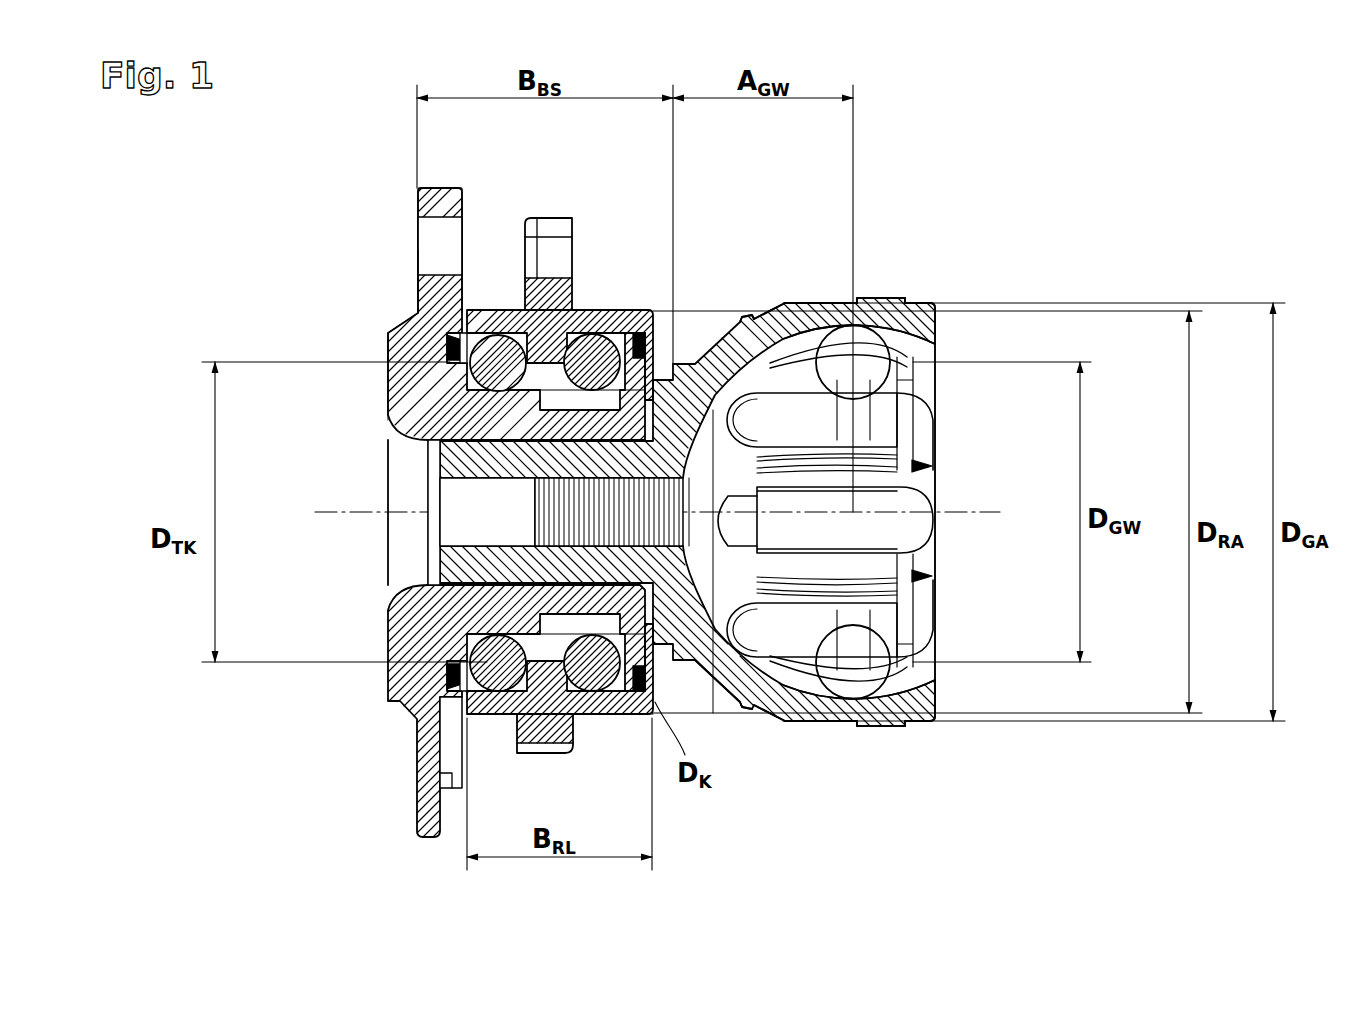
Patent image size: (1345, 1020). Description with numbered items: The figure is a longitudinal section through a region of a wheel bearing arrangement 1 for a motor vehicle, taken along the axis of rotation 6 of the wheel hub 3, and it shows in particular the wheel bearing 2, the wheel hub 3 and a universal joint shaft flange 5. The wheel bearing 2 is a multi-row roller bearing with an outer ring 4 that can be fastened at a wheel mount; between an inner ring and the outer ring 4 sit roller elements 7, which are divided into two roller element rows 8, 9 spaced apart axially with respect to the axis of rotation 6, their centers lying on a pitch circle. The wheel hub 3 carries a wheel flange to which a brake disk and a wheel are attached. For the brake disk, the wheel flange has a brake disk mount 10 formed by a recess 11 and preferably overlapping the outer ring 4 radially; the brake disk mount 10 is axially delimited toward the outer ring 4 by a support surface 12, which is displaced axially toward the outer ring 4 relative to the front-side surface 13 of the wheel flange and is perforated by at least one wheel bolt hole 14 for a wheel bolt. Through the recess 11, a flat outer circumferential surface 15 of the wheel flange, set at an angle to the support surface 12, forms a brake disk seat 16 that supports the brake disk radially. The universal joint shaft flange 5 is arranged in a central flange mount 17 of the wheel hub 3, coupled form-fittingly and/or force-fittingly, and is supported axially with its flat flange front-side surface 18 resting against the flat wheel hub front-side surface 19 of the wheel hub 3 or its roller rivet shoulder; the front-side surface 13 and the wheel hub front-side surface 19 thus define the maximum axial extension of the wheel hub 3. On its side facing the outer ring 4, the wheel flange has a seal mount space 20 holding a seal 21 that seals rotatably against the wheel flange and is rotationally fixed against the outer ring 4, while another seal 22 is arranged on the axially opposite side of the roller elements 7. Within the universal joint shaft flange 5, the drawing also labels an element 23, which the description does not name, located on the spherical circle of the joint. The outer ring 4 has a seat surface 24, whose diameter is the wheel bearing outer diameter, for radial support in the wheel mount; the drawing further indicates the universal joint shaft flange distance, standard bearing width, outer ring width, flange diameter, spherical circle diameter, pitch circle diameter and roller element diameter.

The wheel bearing arrangement 1 is at (1002, 188).
The wheel bearing 2 is at (619, 228).
The wheel hub 3 is at (676, 360).
The outer ring 4 is at (589, 322).
The universal joint shaft flange 5 is at (881, 279).
The axis of rotation 6 is at (987, 506).
The roller elements 7 is at (498, 355).
The roller element row 8 is at (485, 306).
The roller element row 9 is at (603, 304).
The brake disk mount 10 is at (387, 284).
The recess 11 is at (405, 302).
The support surface 12 is at (401, 310).
The front-side surface 13 is at (384, 352).
The wheel bolt hole 14 is at (440, 233).
The outer circumferential surface 15 is at (379, 276).
The brake disk seat 16 is at (366, 323).
The central flange mount 17 is at (435, 560).
The flange front-side surface 18 is at (703, 342).
The wheel hub front-side surface 19 is at (712, 672).
The seal mount space 20 is at (452, 360).
The seal 21 is at (464, 366).
The seal 22 is at (661, 344).
The joint ball 23 is at (866, 339).
The seat surface 24 is at (627, 718).